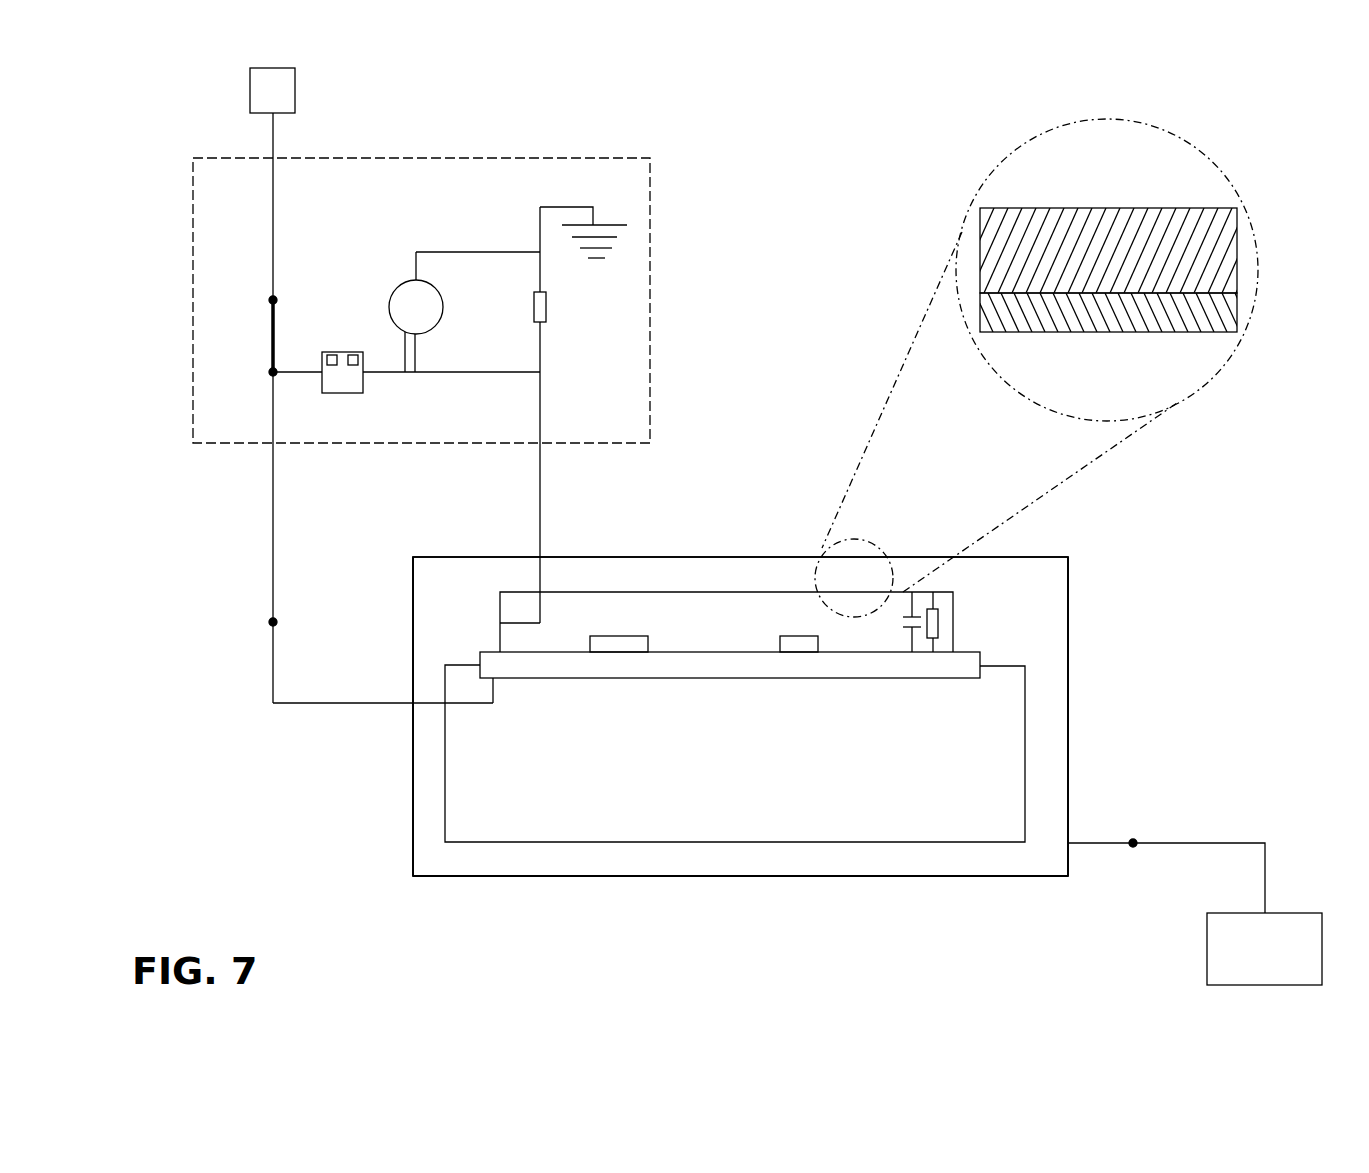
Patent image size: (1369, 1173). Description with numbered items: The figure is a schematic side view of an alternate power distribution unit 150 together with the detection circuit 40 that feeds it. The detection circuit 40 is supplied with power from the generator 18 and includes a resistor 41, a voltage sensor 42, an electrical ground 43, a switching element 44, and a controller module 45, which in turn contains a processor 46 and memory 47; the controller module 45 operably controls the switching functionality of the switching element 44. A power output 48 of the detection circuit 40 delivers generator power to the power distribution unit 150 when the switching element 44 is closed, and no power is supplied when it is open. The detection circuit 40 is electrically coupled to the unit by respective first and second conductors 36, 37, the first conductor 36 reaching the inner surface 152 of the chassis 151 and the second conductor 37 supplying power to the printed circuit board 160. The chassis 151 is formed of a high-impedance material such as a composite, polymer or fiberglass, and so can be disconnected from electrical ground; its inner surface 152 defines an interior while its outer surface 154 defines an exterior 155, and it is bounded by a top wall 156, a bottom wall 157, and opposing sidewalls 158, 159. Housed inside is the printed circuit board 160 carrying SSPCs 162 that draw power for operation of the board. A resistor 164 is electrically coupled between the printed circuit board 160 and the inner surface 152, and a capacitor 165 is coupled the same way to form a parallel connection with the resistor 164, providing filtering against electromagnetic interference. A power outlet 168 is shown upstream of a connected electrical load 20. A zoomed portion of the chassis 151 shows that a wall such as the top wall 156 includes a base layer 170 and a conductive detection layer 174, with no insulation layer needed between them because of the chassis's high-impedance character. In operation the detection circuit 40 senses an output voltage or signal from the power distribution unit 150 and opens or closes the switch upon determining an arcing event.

The generator 18 is at (272, 90).
The electrical load 20 is at (1264, 949).
The first conductor 36 is at (545, 479).
The second conductor 37 is at (276, 530).
The detection circuit 40 is at (547, 158).
The resistor 41 is at (546, 307).
The voltage sensor 42 is at (399, 283).
The electrical ground 43 is at (625, 243).
The switching element 44 is at (270, 340).
The controller module 45 is at (342, 384).
The processor 46 is at (330, 358).
The memory 47 is at (355, 355).
The power output 48 is at (277, 621).
The power distribution unit 150 is at (366, 818).
The chassis 151 is at (702, 548).
The inner surface 152 is at (673, 838).
The outer surface 154 is at (745, 557).
The exterior 155 is at (878, 927).
The top wall 156 is at (637, 566).
The bottom wall 157 is at (640, 860).
The sidewall 158 is at (431, 748).
The sidewall 159 is at (1042, 710).
The printed circuit board 160 is at (727, 665).
The SSPC 162 is at (611, 636).
The resistor 164 is at (935, 630).
The capacitor 165 is at (906, 630).
The power outlet 168 is at (1141, 838).
The base layer 170 is at (1212, 268).
The conductive detection layer 174 is at (1198, 318).